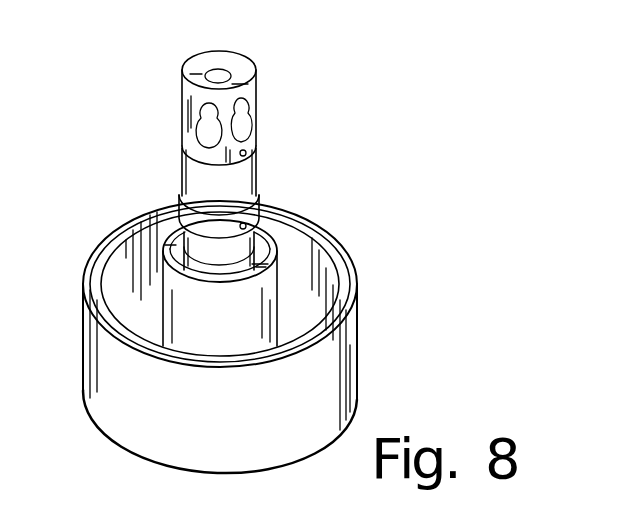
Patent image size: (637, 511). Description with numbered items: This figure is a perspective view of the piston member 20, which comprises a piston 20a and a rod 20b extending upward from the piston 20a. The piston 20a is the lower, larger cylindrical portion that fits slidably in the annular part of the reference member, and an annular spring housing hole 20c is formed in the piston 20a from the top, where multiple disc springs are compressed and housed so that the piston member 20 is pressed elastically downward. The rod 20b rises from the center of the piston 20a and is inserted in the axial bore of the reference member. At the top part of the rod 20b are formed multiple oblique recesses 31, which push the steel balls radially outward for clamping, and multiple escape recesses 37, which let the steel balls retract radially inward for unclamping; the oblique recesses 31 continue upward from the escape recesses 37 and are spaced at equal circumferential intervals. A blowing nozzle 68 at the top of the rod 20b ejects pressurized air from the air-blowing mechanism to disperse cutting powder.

The piston member 20 is at (258, 313).
The piston 20a is at (343, 356).
The rod 20b is at (256, 177).
The spring housing hole 20c is at (113, 292).
The oblique recesses 31 is at (247, 104).
The escape recesses 37 is at (238, 128).
The blowing nozzle 68 is at (220, 74).